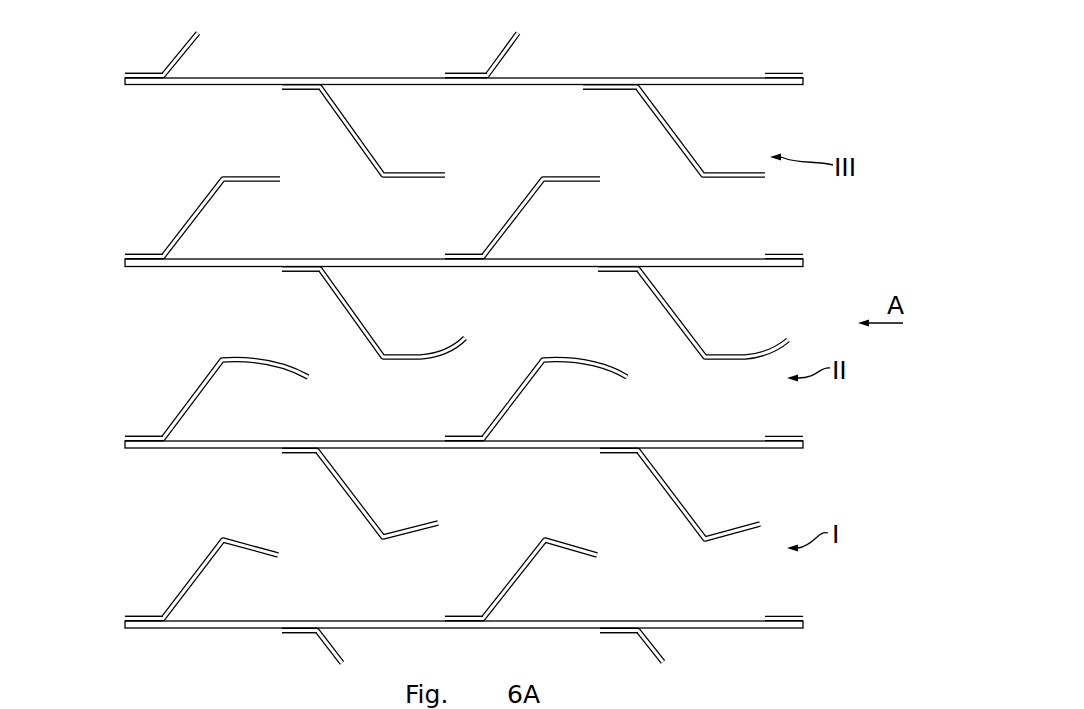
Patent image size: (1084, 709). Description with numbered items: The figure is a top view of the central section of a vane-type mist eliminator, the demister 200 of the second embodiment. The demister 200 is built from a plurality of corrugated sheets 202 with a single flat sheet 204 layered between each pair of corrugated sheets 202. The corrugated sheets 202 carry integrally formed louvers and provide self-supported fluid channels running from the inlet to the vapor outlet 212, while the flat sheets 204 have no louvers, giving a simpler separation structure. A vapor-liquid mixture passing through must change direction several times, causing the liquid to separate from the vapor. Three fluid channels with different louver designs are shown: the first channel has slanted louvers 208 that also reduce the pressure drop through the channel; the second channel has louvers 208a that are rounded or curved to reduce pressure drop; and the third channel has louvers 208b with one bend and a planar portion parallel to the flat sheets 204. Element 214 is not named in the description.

The demister 200 is at (460, 341).
The corrugated sheet 202 is at (415, 348).
The flat sheet 204 is at (150, 87).
The slanted louver 208 is at (413, 527).
The rounded louver 208a is at (368, 335).
The bent louver 208b is at (356, 148).
The vapor outlet 212 is at (120, 405).
The folded ledge 214 is at (615, 90).